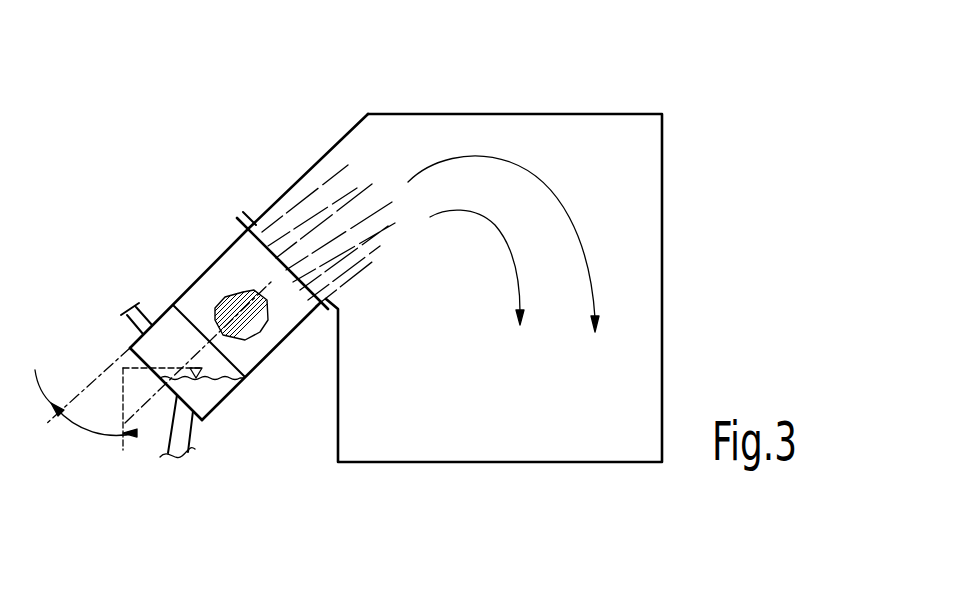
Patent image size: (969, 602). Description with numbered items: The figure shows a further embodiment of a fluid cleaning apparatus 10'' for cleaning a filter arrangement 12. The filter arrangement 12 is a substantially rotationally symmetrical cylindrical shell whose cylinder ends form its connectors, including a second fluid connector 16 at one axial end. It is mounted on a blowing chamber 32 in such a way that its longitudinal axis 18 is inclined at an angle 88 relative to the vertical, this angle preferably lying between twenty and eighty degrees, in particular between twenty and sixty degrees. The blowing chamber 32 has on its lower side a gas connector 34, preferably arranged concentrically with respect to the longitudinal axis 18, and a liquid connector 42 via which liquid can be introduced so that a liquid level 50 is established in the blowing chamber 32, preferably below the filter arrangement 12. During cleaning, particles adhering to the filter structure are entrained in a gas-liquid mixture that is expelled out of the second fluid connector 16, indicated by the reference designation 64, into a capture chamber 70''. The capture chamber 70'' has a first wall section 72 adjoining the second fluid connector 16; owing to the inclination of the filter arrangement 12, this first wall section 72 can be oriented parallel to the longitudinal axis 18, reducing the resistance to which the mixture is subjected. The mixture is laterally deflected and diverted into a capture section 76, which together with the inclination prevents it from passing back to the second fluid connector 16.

The fluid cleaning apparatus 10'' is at (599, 288).
The capture chamber 70'' is at (576, 288).
The first wall section 72 is at (335, 133).
The filter arrangement 12 is at (203, 250).
The second fluid connector 16 is at (296, 262).
The expelled gas-liquid mixture 64 is at (331, 198).
The liquid connector 42 is at (139, 298).
The liquid level 50 is at (129, 346).
The blowing chamber 32 is at (212, 345).
The longitudinal axis 18 is at (102, 437).
The gas connector 34 is at (181, 436).
The angle 88 is at (44, 392).
The capture section 76 is at (503, 244).